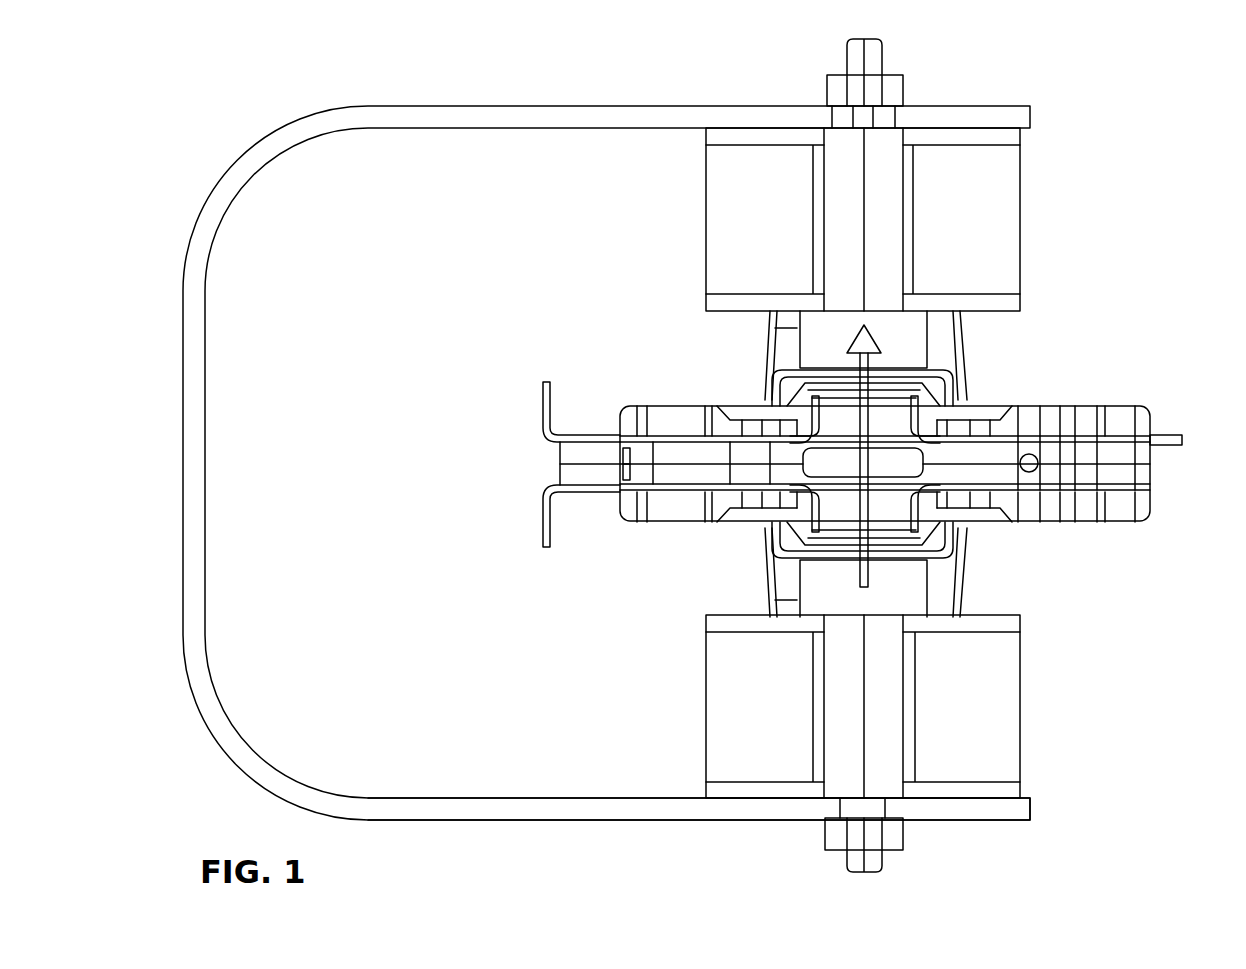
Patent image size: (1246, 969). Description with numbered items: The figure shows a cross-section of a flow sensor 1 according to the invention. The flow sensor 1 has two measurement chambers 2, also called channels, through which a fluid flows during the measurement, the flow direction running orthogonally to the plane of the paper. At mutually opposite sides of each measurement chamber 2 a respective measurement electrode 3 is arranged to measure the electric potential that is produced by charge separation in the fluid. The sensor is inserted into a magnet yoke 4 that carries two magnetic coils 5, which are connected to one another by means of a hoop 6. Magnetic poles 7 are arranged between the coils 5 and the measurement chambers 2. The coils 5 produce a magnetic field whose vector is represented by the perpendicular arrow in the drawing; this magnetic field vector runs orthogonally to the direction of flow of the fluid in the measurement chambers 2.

The flow sensor 1 is at (1176, 355).
The measurement chamber 2 is at (893, 415).
The measurement electrode 3 is at (817, 420).
The magnet yoke 4 is at (374, 798).
The magnetic coil 5 is at (957, 218).
The hoop 6 is at (192, 458).
The magnetic pole 7 is at (897, 336).